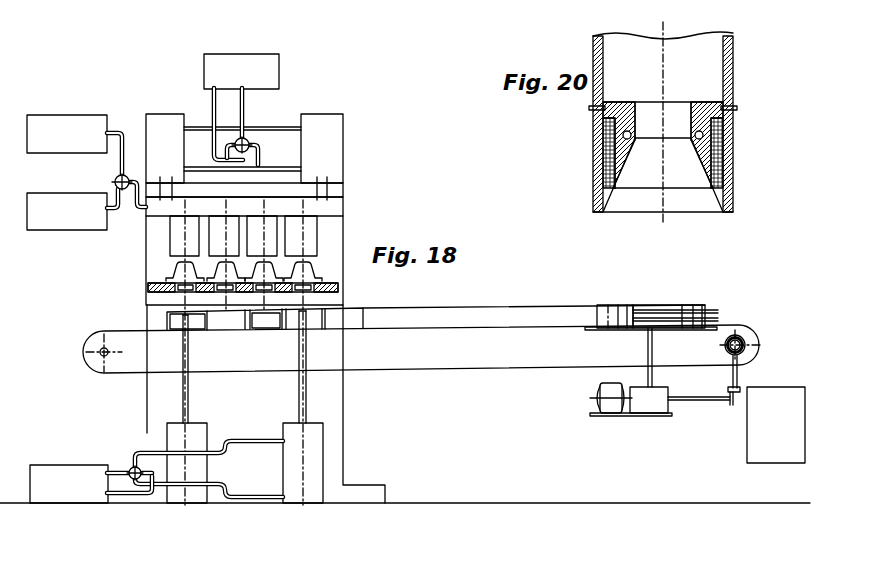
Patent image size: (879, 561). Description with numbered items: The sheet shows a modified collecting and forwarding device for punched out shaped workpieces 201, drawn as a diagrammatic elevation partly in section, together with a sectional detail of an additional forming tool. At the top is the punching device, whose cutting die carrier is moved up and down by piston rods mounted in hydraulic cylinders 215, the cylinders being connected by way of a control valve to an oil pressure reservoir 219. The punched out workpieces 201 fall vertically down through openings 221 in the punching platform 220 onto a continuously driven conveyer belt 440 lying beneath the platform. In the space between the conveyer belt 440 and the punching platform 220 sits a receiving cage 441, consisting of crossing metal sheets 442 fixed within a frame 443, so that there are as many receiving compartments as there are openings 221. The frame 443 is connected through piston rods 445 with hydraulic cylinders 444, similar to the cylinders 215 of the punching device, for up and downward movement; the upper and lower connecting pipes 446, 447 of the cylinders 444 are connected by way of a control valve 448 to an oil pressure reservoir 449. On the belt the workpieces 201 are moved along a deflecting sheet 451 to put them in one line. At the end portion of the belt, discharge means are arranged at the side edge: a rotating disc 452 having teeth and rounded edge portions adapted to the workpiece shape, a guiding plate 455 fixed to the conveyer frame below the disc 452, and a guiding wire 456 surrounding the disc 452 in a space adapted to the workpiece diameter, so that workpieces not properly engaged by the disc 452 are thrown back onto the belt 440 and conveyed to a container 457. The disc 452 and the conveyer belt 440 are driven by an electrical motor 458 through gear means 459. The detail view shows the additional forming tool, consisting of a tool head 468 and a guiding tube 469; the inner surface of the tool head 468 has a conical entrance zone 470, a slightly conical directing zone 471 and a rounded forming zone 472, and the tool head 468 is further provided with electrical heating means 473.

In FIG. 18, the hydraulic cylinders 215 is at (172, 118).
In FIG. 18, the oil pressure reservoir 219 is at (279, 73).
In FIG. 18, the punched out shaped workpieces 201 is at (178, 272).
In FIG. 18, the punching platform 220 is at (340, 288).
In FIG. 18, the openings 221 is at (193, 290).
In FIG. 18, the conveyer belt 440 is at (438, 370).
In FIG. 18, the receiving cage 441 is at (268, 330).
In FIG. 18, the crossing metal sheets 442 is at (208, 330).
In FIG. 18, the frame 443 is at (165, 314).
In FIG. 18, the hydraulic cylinders 444 is at (283, 463).
In FIG. 18, the piston rods 445 is at (189, 393).
In FIG. 18, the upper connecting pipe 446 is at (253, 498).
In FIG. 18, the lower connecting pipe 447 is at (240, 441).
In FIG. 18, the control valve 448 is at (131, 466).
In FIG. 18, the oil pressure reservoir 449 is at (82, 462).
In FIG. 18, the deflecting sheet 451 is at (477, 307).
In FIG. 18, the rotating disc 452 is at (613, 312).
In FIG. 18, the guiding plate 455 is at (673, 331).
In FIG. 18, the guiding wire 456 is at (718, 312).
In FIG. 18, the container 457 is at (776, 425).
In FIG. 18, the electrical motor 458 is at (593, 400).
In FIG. 18, the gear means 459 is at (650, 413).
In FIG. 20, the tool head 468 is at (727, 128).
In FIG. 20, the guiding tube 469 is at (731, 85).
In FIG. 20, the conical entrance zone 470 is at (600, 197).
In FIG. 20, the slightly conical directing zone 471 is at (620, 168).
In FIG. 20, the rounded forming zone 472 is at (629, 139).
In FIG. 20, the electrical heating means 473 is at (718, 157).